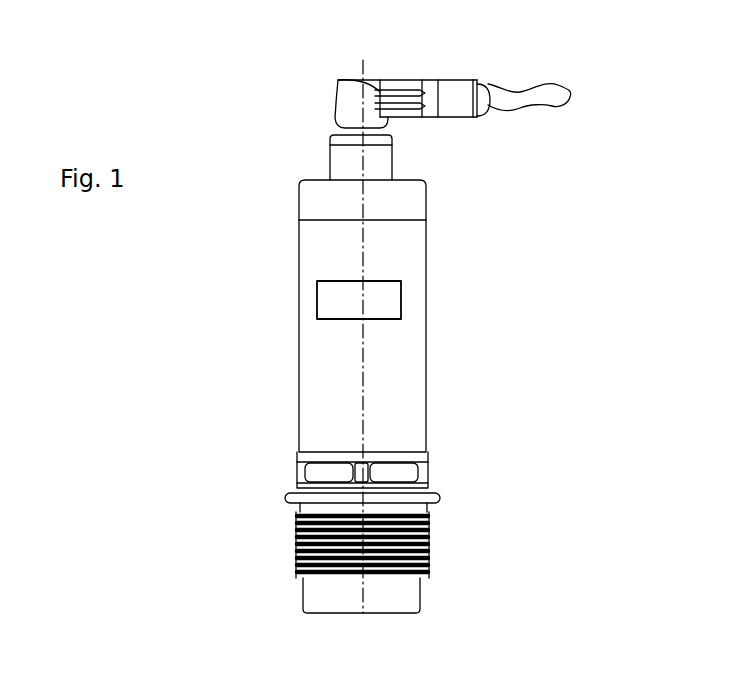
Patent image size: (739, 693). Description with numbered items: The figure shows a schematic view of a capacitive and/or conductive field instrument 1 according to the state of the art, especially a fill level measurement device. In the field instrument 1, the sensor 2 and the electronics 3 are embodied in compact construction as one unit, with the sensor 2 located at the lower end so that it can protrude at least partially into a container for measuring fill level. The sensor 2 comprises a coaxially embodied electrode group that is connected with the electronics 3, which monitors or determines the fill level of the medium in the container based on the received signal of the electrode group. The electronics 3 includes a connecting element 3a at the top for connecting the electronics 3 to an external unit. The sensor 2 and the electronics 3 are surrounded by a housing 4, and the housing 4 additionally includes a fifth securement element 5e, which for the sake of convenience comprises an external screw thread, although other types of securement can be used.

The field instrument 1 is at (117, 345).
The sensor 2 is at (450, 588).
The electronics 3 is at (359, 300).
The connecting element 3a is at (498, 120).
The housing 4 is at (287, 420).
The fifth securement element 5e is at (283, 547).